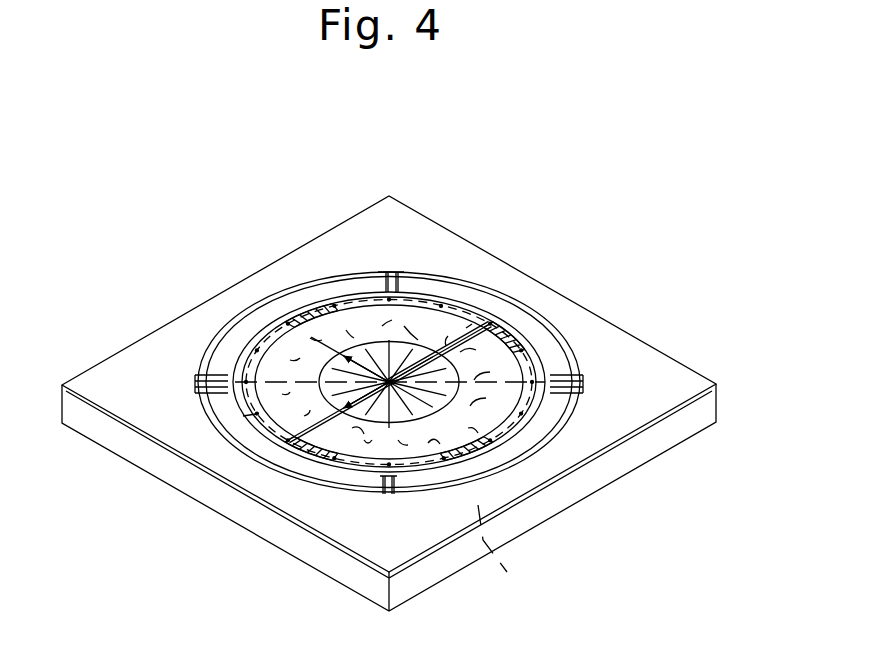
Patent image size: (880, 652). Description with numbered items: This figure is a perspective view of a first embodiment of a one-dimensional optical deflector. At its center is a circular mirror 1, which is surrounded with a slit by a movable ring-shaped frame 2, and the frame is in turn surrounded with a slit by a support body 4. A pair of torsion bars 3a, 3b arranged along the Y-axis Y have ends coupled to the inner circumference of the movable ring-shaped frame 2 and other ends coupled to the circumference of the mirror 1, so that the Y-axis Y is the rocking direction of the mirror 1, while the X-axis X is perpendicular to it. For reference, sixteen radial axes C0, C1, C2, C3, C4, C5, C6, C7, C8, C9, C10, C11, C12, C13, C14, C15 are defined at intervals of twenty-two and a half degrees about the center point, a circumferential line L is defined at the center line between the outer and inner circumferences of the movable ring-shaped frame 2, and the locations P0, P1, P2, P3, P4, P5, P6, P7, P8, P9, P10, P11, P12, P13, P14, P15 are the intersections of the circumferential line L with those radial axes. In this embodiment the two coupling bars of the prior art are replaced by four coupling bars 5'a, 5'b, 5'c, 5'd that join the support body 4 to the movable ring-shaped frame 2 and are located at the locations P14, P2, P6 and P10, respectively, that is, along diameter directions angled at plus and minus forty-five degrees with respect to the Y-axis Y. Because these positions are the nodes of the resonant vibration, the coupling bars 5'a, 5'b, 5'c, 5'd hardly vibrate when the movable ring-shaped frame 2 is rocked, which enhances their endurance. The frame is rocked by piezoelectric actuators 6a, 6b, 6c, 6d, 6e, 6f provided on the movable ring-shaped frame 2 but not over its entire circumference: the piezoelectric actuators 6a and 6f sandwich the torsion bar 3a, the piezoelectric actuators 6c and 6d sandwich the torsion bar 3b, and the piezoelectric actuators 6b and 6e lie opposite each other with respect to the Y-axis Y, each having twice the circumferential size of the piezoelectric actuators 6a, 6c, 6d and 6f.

The circular mirror 1 is at (418, 340).
The movable ring-shaped frame 2 is at (512, 345).
The torsion bar 3a is at (542, 348).
The torsion bar 3b is at (345, 470).
The support body 4 is at (584, 379).
The coupling bar 5'a is at (638, 352).
The coupling bar 5'b is at (431, 557).
The coupling bar 5'c is at (138, 435).
The coupling bar 5'd is at (365, 217).
The piezoelectric actuator 6a is at (526, 322).
The piezoelectric actuator 6b is at (490, 441).
The piezoelectric actuator 6c is at (287, 442).
The piezoelectric actuator 6d is at (255, 414).
The piezoelectric actuator 6e is at (287, 323).
The piezoelectric actuator 6f is at (466, 328).
The location P0 is at (490, 440).
The location P1 is at (444, 458).
The location P2 is at (389, 464).
The location P3 is at (334, 458).
The location P4 is at (288, 440).
The location P5 is at (257, 414).
The location P6 is at (246, 382).
The location P7 is at (257, 350).
The location P8 is at (288, 324).
The location P9 is at (334, 306).
The location P10 is at (389, 300).
The location P11 is at (441, 306).
The location P12 is at (490, 324).
The location P13 is at (521, 350).
The location P14 is at (532, 382).
The location P15 is at (521, 414).
The radial axis C0 is at (481, 432).
The radial axis C1 is at (440, 442).
The radial axis C2 is at (407, 449).
The radial axis C3 is at (372, 447).
The radial axis C4 is at (350, 433).
The radial axis C5 is at (297, 419).
The radial axis C6 is at (276, 395).
The radial axis C7 is at (286, 363).
The radial axis C8 is at (306, 341).
The radial axis C9 is at (342, 330).
The radial axis C10 is at (375, 328).
The radial axis C11 is at (409, 328).
The radial axis C12 is at (454, 335).
The radial axis C13 is at (477, 352).
The radial axis C14 is at (495, 374).
The radial axis C15 is at (490, 403).
The circumferential line L is at (497, 557).
The X-axis X is at (350, 359).
The Y-axis Y is at (366, 398).